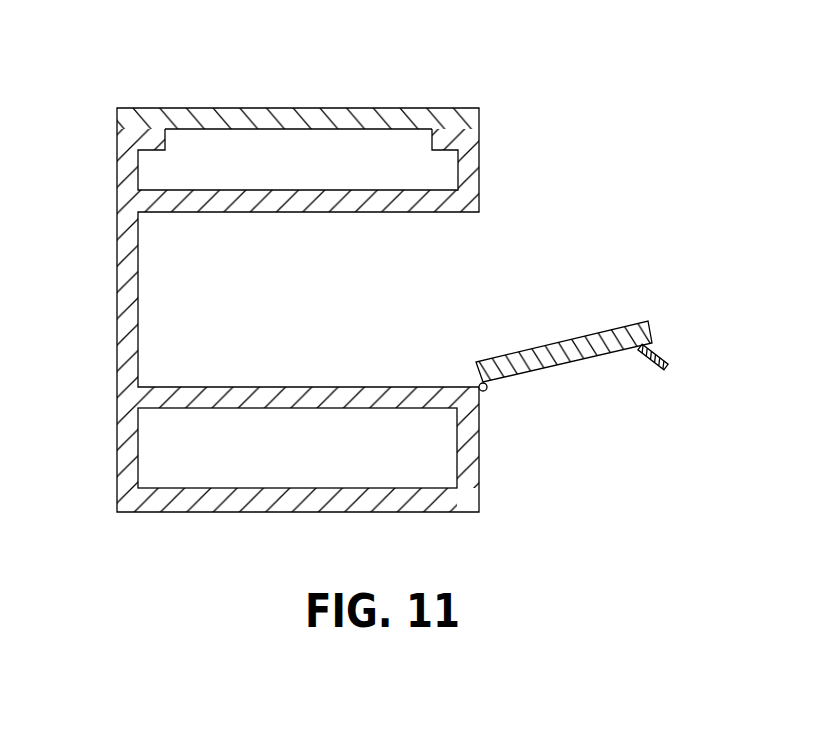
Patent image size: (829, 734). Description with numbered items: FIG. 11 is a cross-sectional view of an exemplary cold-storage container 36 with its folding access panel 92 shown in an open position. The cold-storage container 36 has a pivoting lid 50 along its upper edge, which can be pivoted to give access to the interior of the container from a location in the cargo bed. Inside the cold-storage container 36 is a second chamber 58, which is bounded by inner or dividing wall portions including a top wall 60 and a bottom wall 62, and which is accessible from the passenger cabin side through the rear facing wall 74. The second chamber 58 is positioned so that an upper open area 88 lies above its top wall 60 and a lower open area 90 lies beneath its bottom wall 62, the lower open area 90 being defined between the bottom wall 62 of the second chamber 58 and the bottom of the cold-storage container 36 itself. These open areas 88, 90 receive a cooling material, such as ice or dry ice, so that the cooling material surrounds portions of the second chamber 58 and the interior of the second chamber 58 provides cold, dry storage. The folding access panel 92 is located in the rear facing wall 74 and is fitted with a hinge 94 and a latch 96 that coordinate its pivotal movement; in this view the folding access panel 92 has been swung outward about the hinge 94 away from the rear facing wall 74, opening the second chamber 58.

The cold-storage container 36 is at (355, 295).
The pivoting lid 50 is at (260, 113).
The second chamber 58 is at (167, 307).
The top wall 60 is at (165, 203).
The bottom wall 62 is at (168, 392).
The rear facing wall 74 is at (479, 473).
The upper open area 88 is at (373, 153).
The lower open area 90 is at (320, 465).
The folding access panel 92 is at (549, 343).
The hinge 94 is at (487, 388).
The latch 96 is at (645, 365).